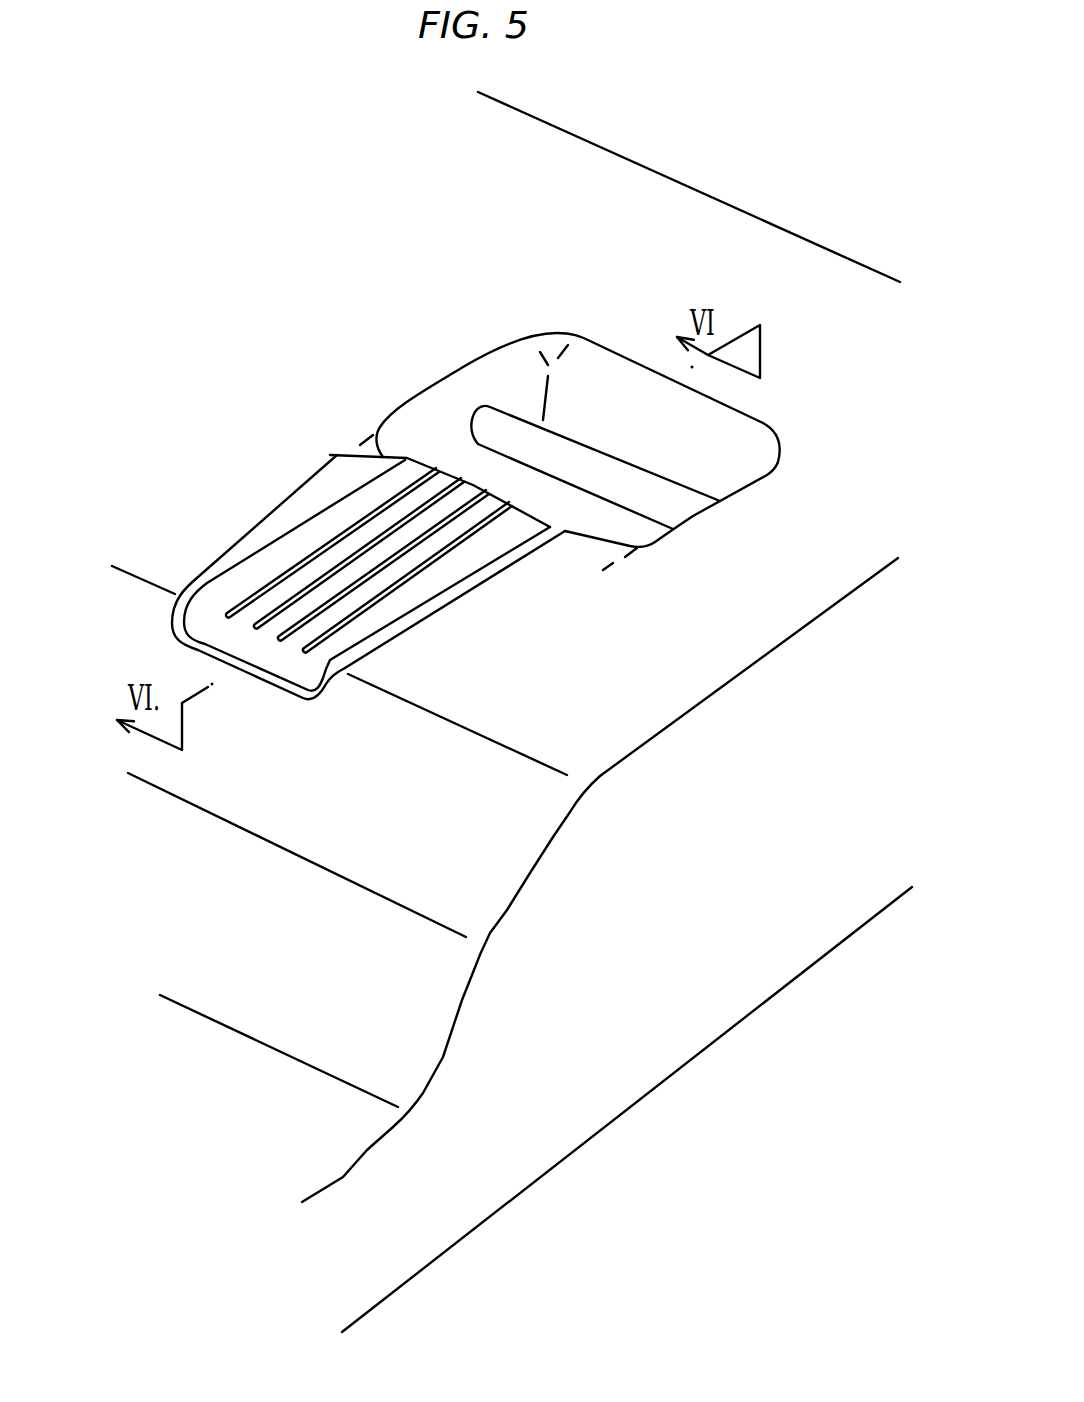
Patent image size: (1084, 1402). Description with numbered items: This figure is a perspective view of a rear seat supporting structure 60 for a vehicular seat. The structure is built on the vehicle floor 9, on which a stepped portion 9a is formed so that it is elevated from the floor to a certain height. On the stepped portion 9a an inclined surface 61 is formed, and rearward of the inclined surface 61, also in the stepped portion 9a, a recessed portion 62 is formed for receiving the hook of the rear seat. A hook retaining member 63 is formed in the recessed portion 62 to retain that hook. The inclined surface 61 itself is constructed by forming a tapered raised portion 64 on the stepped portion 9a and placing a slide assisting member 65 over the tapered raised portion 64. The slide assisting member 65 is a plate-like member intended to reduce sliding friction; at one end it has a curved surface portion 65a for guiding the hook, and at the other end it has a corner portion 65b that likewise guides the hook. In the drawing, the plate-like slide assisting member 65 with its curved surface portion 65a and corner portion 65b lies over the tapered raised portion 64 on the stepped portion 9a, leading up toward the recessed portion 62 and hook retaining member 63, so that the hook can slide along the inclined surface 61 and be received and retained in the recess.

The floor 9 is at (312, 1133).
The stepped portion 9a is at (666, 684).
The rear seat supporting structure 60 is at (536, 481).
The inclined surface 61 is at (503, 575).
The recessed portion 62 is at (612, 408).
The hook retaining member 63 is at (652, 490).
The tapered raised portion 64 is at (548, 550).
The slide assisting member 65 is at (383, 610).
The curved surface portion 65a is at (296, 645).
The corner portion 65b is at (413, 467).